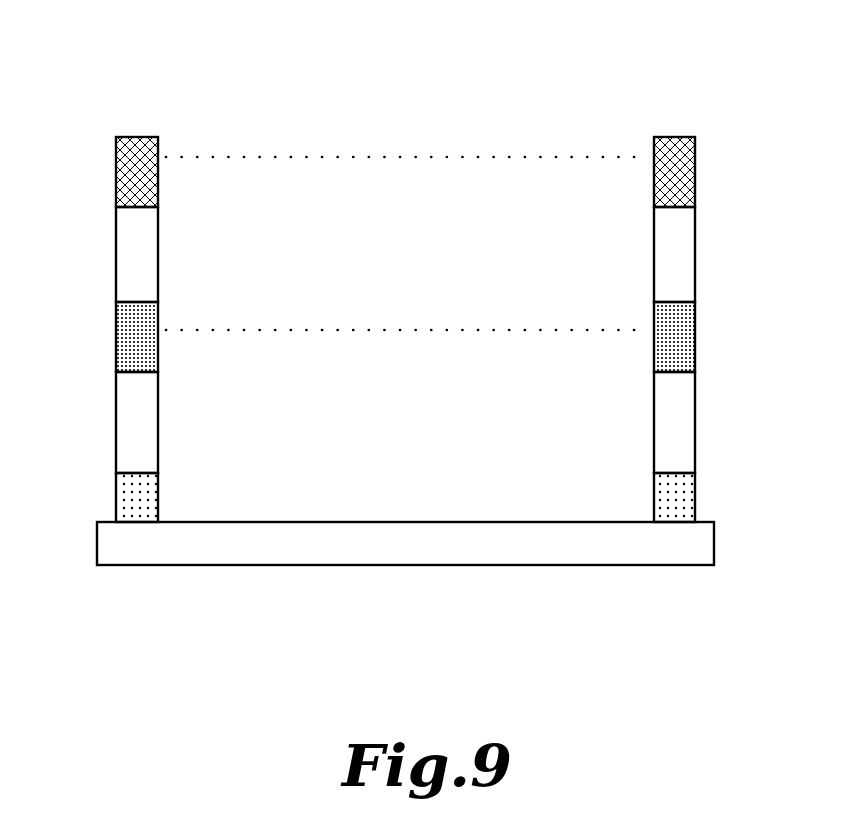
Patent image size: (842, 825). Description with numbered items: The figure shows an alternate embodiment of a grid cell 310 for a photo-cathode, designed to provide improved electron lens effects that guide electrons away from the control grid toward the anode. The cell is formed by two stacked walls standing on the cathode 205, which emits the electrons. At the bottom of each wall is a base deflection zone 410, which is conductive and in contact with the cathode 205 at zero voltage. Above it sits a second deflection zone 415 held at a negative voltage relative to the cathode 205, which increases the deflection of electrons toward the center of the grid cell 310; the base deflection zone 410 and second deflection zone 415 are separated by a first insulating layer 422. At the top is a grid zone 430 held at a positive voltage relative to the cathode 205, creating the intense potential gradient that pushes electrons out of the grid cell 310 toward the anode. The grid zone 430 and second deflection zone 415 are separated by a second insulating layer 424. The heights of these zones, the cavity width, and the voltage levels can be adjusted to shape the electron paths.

The grid cell 310 is at (440, 125).
The cathode 205 is at (248, 521).
The grid zone 430 is at (116, 165).
The second insulating layer 424 is at (116, 263).
The second deflection zone 415 is at (116, 332).
The first insulating layer 422 is at (116, 403).
The base deflection zone 410 is at (116, 487).